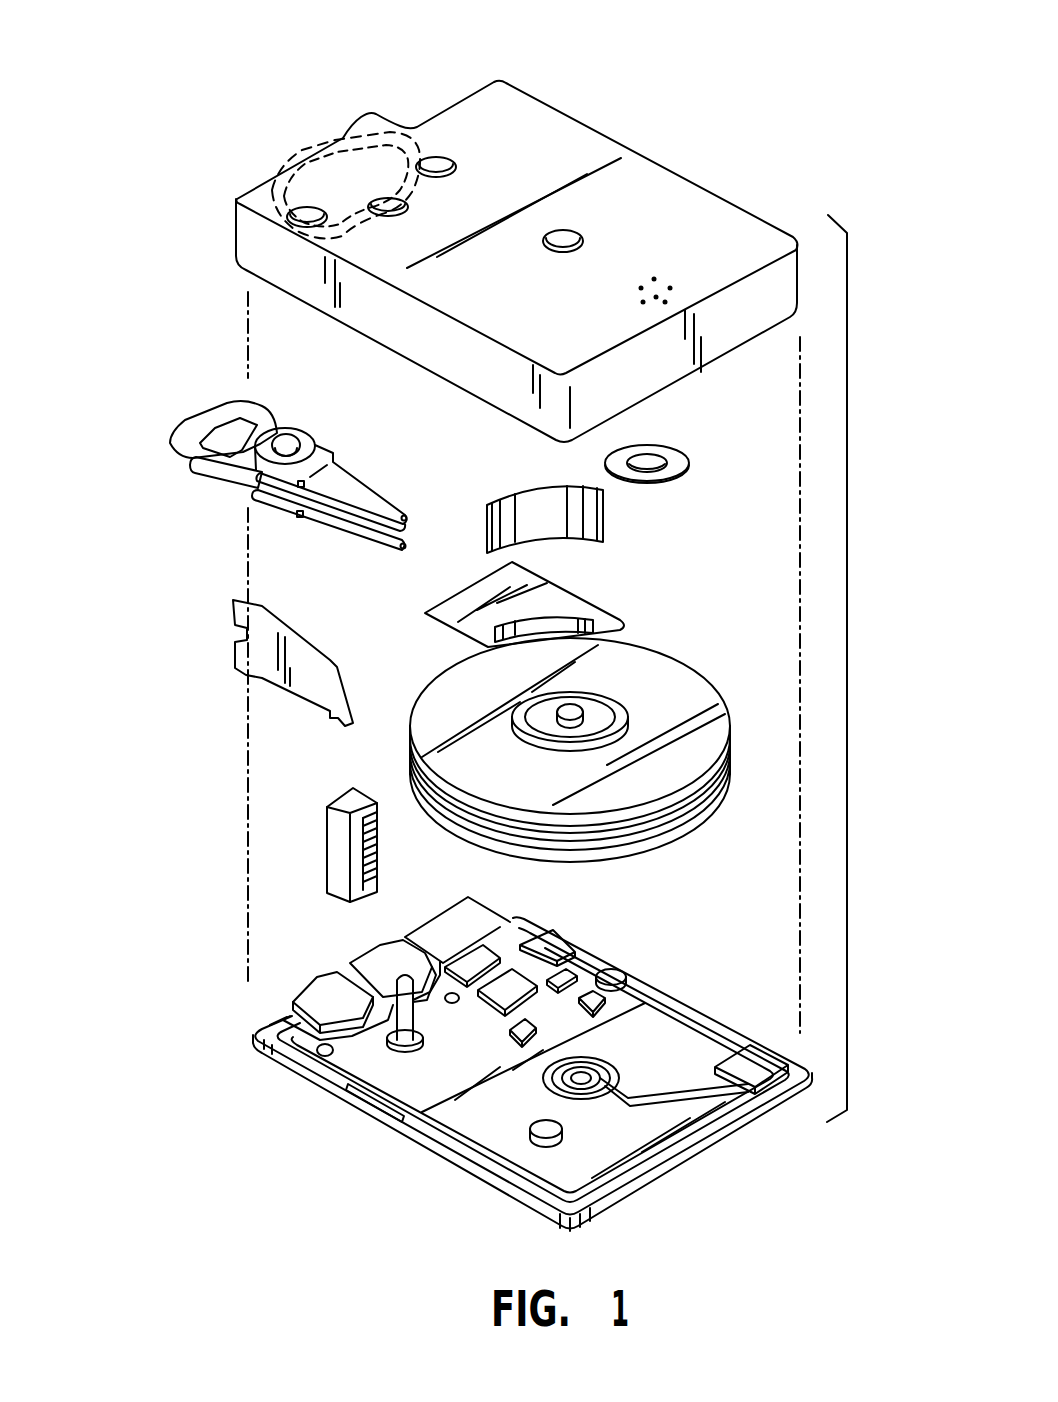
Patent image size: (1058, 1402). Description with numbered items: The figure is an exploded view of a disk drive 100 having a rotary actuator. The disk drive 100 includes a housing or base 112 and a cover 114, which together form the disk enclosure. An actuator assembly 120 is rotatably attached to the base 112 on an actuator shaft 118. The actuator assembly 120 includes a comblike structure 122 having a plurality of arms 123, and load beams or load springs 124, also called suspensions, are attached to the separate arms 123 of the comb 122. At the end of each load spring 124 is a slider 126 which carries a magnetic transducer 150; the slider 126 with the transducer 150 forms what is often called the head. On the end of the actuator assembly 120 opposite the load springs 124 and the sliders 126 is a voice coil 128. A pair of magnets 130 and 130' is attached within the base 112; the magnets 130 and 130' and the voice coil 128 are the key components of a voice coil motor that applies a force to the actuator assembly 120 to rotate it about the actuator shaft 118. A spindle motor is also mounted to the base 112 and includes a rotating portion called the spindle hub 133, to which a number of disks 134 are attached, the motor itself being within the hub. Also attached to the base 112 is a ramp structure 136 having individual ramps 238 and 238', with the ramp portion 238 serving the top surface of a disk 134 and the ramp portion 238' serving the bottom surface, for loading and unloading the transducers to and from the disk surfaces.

The disk drive 100 is at (670, 108).
The base 112 is at (702, 1030).
The cover 114 is at (680, 200).
The actuator shaft 118 is at (287, 438).
The actuator assembly 120 is at (222, 478).
The comblike structure 122 is at (312, 518).
The arms 123 is at (323, 438).
The load beams or load springs 124 is at (365, 490).
The slider 126 is at (406, 514).
The voice coil 128 is at (200, 423).
The magnet 130 is at (296, 976).
The magnet 130' is at (338, 161).
The spindle hub 133 is at (575, 708).
The disks 134 is at (697, 692).
The ramp structure 136 is at (333, 848).
The magnetic transducer 150 is at (407, 527).
The ramp portion 238 is at (331, 810).
The ramp portion 238' is at (406, 854).